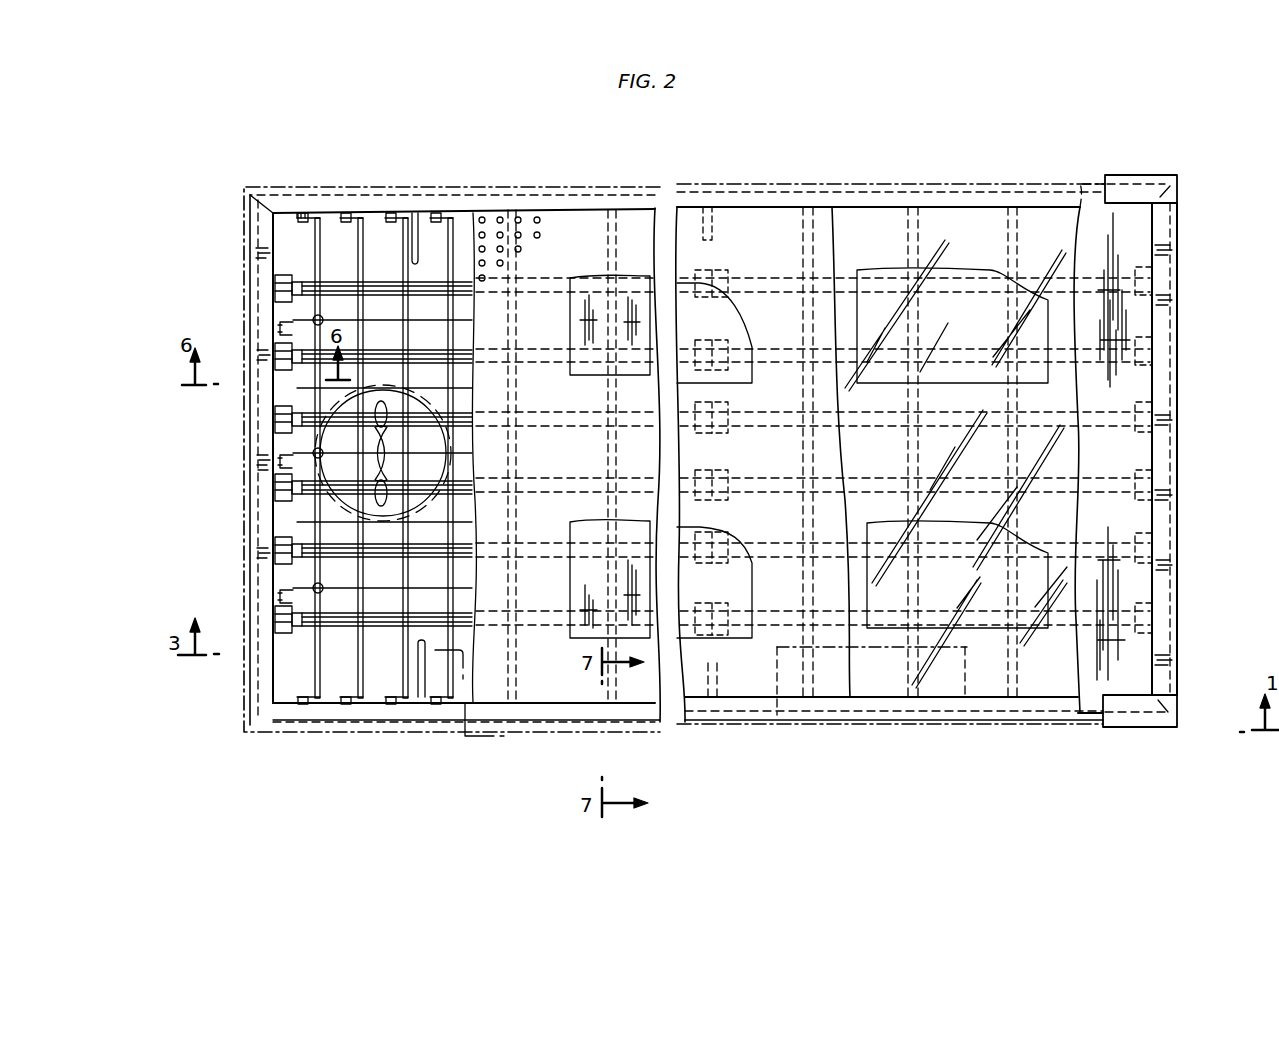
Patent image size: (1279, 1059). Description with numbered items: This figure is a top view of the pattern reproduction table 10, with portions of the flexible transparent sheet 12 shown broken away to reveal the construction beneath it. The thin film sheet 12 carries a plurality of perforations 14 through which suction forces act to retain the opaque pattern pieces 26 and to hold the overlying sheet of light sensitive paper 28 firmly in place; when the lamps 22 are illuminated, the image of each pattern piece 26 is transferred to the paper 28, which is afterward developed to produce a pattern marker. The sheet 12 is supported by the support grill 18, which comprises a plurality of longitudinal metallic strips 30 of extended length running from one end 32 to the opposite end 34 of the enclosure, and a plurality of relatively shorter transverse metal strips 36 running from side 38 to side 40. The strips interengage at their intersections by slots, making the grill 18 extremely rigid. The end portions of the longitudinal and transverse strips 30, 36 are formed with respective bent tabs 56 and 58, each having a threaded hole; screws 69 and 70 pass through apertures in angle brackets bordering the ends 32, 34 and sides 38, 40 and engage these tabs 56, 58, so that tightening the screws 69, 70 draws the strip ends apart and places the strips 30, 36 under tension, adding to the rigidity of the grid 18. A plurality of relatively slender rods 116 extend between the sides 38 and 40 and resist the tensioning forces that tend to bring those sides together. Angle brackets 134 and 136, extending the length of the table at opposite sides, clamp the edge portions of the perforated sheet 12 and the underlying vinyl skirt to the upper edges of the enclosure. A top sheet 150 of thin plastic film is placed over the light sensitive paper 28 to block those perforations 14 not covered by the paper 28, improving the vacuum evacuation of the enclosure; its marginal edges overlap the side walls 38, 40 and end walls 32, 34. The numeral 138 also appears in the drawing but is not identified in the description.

The pattern reproduction table 10 is at (927, 176).
The flexible transparent sheet 12 is at (566, 228).
The perforations 14 is at (536, 216).
The support grill 18 is at (320, 680).
The lamps 22 is at (336, 283).
The pattern pieces 26 is at (574, 318).
The light sensitive paper 28 is at (872, 222).
The longitudinal metallic strips 30 is at (378, 323).
The end of the enclosure 32 is at (245, 493).
The opposite end of the enclosure 34 is at (1173, 310).
The transverse metal strips 36 is at (398, 242).
The side of the enclosure 38 is at (808, 186).
The side of the enclosure 40 is at (862, 722).
The bent tabs 56 is at (284, 336).
The bent tabs 58 is at (312, 211).
The screws 69 is at (285, 334).
The screws 70 is at (302, 224).
The slender rods 116 is at (421, 701).
The angle bracket 134 is at (1146, 174).
The angle bracket 136 is at (1132, 729).
The outer frame 138 is at (256, 238).
The top sheet 150 is at (1138, 237).